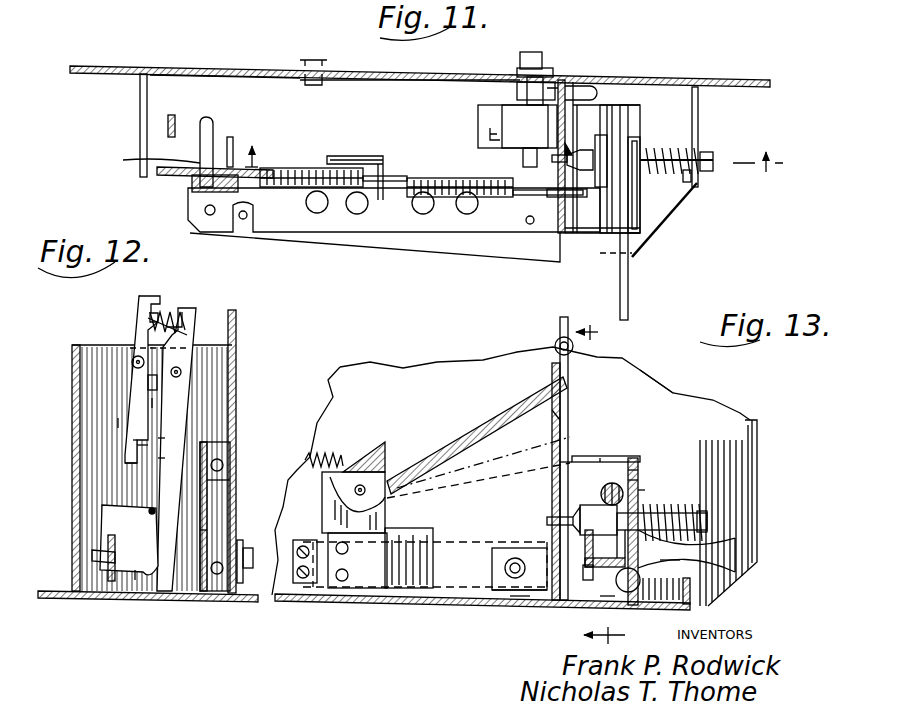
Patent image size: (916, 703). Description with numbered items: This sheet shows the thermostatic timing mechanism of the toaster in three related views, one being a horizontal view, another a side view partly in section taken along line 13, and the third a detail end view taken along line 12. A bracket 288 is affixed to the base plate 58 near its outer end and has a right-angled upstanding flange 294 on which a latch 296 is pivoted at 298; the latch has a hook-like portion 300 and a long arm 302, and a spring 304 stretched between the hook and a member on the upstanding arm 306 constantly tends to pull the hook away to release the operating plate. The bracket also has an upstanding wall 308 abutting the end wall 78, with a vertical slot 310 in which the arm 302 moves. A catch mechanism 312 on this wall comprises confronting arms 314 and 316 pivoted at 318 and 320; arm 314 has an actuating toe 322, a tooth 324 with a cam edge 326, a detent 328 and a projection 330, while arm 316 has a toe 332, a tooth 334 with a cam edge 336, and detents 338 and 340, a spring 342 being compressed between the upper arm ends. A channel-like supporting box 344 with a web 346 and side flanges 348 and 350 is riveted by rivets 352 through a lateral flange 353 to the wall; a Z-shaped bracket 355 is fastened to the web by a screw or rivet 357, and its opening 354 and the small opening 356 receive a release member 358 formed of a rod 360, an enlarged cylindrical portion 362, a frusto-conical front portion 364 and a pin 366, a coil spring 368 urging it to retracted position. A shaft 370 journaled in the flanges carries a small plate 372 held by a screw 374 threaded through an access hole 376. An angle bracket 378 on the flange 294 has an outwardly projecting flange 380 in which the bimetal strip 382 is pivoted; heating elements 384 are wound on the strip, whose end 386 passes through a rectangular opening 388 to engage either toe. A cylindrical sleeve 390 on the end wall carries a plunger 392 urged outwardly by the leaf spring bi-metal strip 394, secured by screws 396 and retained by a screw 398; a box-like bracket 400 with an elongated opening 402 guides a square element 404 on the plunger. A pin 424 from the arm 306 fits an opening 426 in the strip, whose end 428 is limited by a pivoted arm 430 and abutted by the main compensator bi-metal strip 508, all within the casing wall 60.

In FIG. 13, the section line 12— 12 is at (612, 488).
In FIG. 11, the section line 13— 13 is at (520, 157).
In FIG. 11, the base plate 58 is at (234, 80).
In FIG. 12, the base plate 58 is at (157, 576).
In FIG. 13, the base plate 58 is at (438, 606).
In FIG. 11, the side wall 60 is at (140, 90).
In FIG. 13, the side wall 60 is at (715, 597).
In FIG. 11, the end wall 78 is at (100, 66).
In FIG. 12, the end wall 78 is at (238, 332).
In FIG. 13, the end wall 78 is at (654, 397).
In FIG. 11, the bracket 288 is at (420, 222).
In FIG. 13, the bracket 288 is at (392, 603).
In FIG. 11, the upstanding flange 294 is at (368, 158).
In FIG. 12, the upstanding flange 294 is at (215, 490).
In FIG. 13, the latch 296 is at (452, 437).
In FIG. 13, the pivot 298 is at (418, 434).
In FIG. 13, the hook-like portion 300 is at (377, 446).
In FIG. 12, the long arm 302 is at (148, 382).
In FIG. 13, the long arm 302 is at (510, 415).
In FIG. 13, the spring 304 is at (342, 440).
In FIG. 11, the upstanding arm 306 is at (228, 160).
In FIG. 11, the upstanding wall 308 is at (590, 108).
In FIG. 12, the upstanding wall 308 is at (77, 347).
In FIG. 13, the upstanding wall 308 is at (555, 355).
In FIG. 12, the vertical slot 310 is at (152, 403).
In FIG. 13, the vertical slot 310 is at (560, 416).
In FIG. 11, the catch mechanism 312 is at (577, 210).
In FIG. 12, the catch mechanism 312 is at (124, 326).
In FIG. 13, the catch mechanism 312 is at (578, 366).
In FIG. 11, the arm 314 is at (557, 208).
In FIG. 12, the arm 314 is at (118, 423).
In FIG. 13, the arm 314 is at (564, 462).
In FIG. 11, the arm 316 is at (569, 150).
In FIG. 12, the arm 316 is at (178, 397).
In FIG. 12, the pivot 318 is at (132, 362).
In FIG. 12, the pivot 320 is at (187, 368).
In FIG. 12, the actuating toe 322 is at (95, 562).
In FIG. 12, the tooth 324 is at (138, 448).
In FIG. 12, the cam edge 326 is at (128, 442).
In FIG. 12, the detent 328 is at (158, 312).
In FIG. 12, the second projection 330 is at (151, 310).
In FIG. 12, the actuating toe 332 is at (135, 576).
In FIG. 12, the tooth 334 is at (162, 458).
In FIG. 12, the cam edge 336 is at (160, 440).
In FIG. 12, the detent 338 is at (193, 312).
In FIG. 12, the second detent 340 is at (153, 335).
In FIG. 13, the second detent 340 is at (566, 320).
In FIG. 12, the spring 342 is at (130, 340).
In FIG. 13, the spring 342 is at (558, 348).
In FIG. 11, the channel-like supporting box 344 is at (650, 212).
In FIG. 12, the channel-like supporting box 344 is at (66, 555).
In FIG. 13, the channel-like supporting box 344 is at (650, 466).
In FIG. 11, the web 346 is at (700, 106).
In FIG. 13, the web 346 is at (672, 559).
In FIG. 11, the side flange 348 is at (644, 118).
In FIG. 12, the side flange 348 is at (203, 530).
In FIG. 13, the side flange 348 is at (632, 457).
In FIG. 11, the side flange 350 is at (582, 234).
In FIG. 12, the side flange 350 is at (76, 530).
In FIG. 11, the rivets 352 is at (533, 95).
In FIG. 12, the rivets 352 is at (218, 574).
In FIG. 11, the lateral flange 353 is at (562, 118).
In FIG. 12, the opening 354 is at (232, 455).
In FIG. 13, the opening 354 is at (602, 480).
In FIG. 13, the Z-shaped bracket 355 is at (583, 563).
In FIG. 13, the small opening 356 is at (660, 540).
In FIG. 13, the screw or rivet 357 is at (708, 582).
In FIG. 11, the release member 358 is at (724, 157).
In FIG. 13, the release member 358 is at (714, 521).
In FIG. 11, the rod 360 is at (695, 155).
In FIG. 13, the rod 360 is at (705, 512).
In FIG. 13, the enlarged cylindrical portion 362 is at (598, 604).
In FIG. 11, the frusto-conical front portion 364 is at (565, 172).
In FIG. 13, the frusto-conical front portion 364 is at (550, 527).
In FIG. 11, the axially projecting pin 366 is at (552, 160).
In FIG. 12, the axially projecting pin 366 is at (127, 562).
In FIG. 13, the axially projecting pin 366 is at (548, 518).
In FIG. 11, the coil spring 368 is at (688, 180).
In FIG. 13, the coil spring 368 is at (655, 492).
In FIG. 11, the shaft 370 is at (628, 272).
In FIG. 13, the shaft 370 is at (648, 468).
In FIG. 13, the small plate 372 is at (608, 607).
In FIG. 11, the screw 374 is at (640, 130).
In FIG. 13, the screw 374 is at (640, 474).
In FIG. 13, the access hole 376 is at (642, 490).
In FIG. 11, the angle bracket 378 is at (343, 154).
In FIG. 11, the outwardly projecting flange 380 is at (362, 215).
In FIG. 11, the bimetal strip 382 is at (398, 178).
In FIG. 12, the bimetal strip 382 is at (118, 545).
In FIG. 11, the heating elements 384 is at (337, 192).
In FIG. 11, the end of strip 386 is at (640, 200).
In FIG. 12, the rectangular opening 388 is at (135, 492).
In FIG. 11, the cylindrical sleeve 390 is at (527, 80).
In FIG. 11, the plunger 392 is at (540, 153).
In FIG. 13, the plunger 392 is at (518, 603).
In FIG. 11, the leaf spring bi-metal strip 394 is at (478, 51).
In FIG. 13, the leaf spring bi-metal strip 394 is at (467, 580).
In FIG. 13, the screws 396 is at (296, 562).
In FIG. 11, the screw 398 is at (535, 64).
In FIG. 11, the box-like bracket 400 is at (505, 118).
In FIG. 13, the box-like bracket 400 is at (545, 592).
In FIG. 13, the elongated opening 402 is at (496, 565).
In FIG. 11, the square element 404 is at (492, 137).
In FIG. 11, the pin 424 is at (199, 125).
In FIG. 11, the opening 426 is at (123, 160).
In FIG. 11, the end of bi-metal strip 428 is at (185, 172).
In FIG. 11, the arm 430 is at (168, 124).
In FIG. 11, the bi-metal strip 508 is at (192, 184).